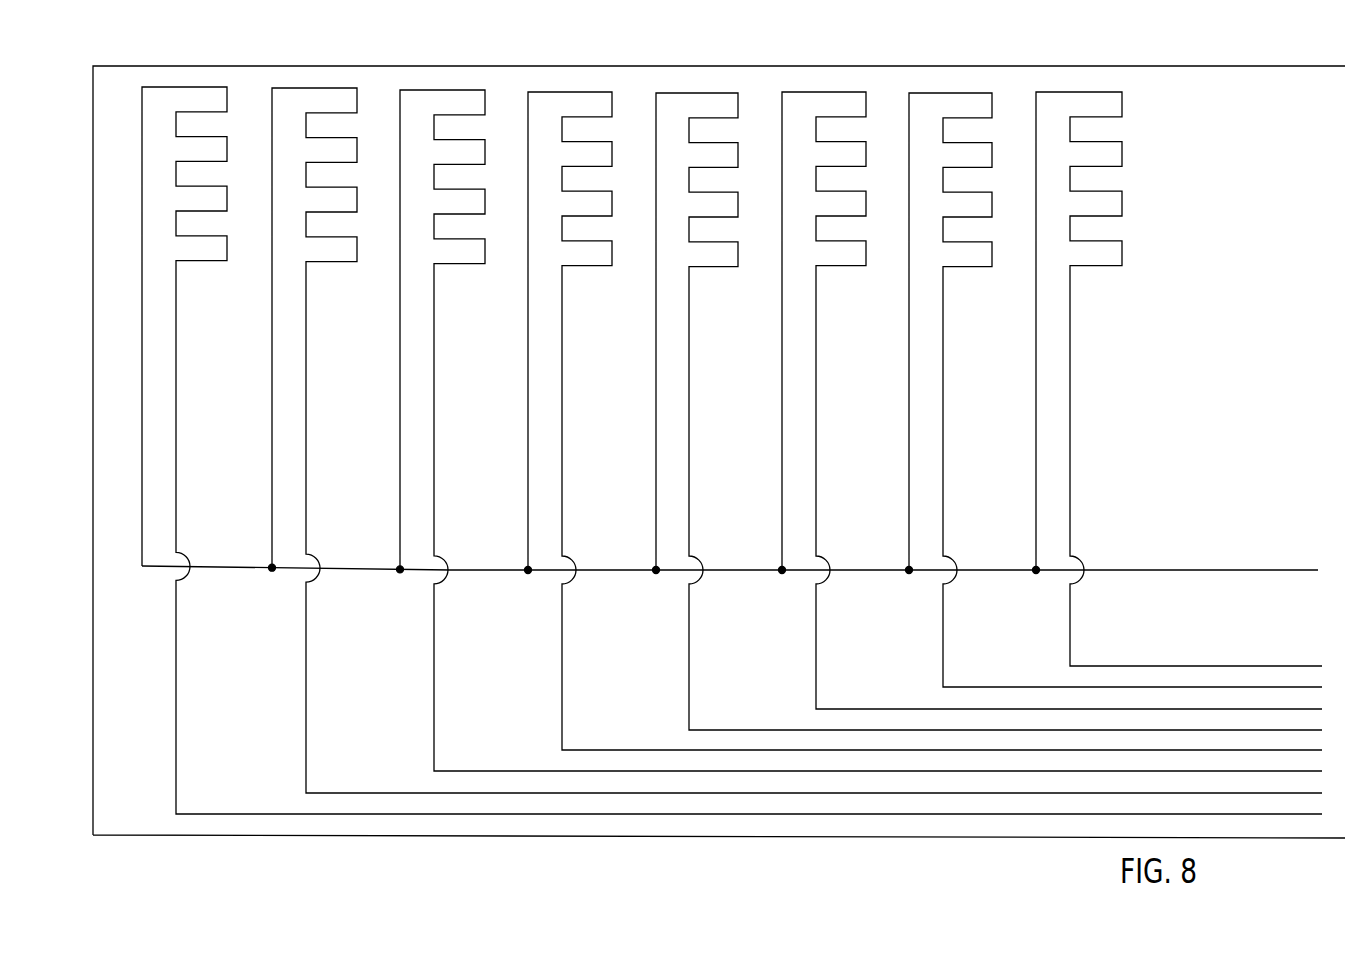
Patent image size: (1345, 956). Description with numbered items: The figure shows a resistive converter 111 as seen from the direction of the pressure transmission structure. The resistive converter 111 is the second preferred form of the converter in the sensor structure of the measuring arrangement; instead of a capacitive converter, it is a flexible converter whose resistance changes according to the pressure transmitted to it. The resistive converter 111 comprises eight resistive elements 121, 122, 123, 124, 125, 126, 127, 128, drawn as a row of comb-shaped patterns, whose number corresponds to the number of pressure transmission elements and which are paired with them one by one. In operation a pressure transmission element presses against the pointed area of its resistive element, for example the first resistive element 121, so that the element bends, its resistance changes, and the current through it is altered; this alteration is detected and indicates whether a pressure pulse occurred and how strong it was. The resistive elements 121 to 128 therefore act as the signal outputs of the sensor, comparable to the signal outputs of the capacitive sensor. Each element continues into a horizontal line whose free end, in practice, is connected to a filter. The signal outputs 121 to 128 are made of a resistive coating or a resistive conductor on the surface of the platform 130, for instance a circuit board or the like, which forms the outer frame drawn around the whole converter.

The resistive converter 111 is at (1217, 262).
The resistive element 121 is at (218, 305).
The resistive element 122 is at (344, 305).
The resistive element 123 is at (474, 305).
The resistive element 124 is at (601, 305).
The resistive element 125 is at (724, 305).
The resistive element 126 is at (856, 305).
The resistive element 127 is at (978, 305).
The resistive element 128 is at (1110, 305).
The platform 130 is at (1192, 90).